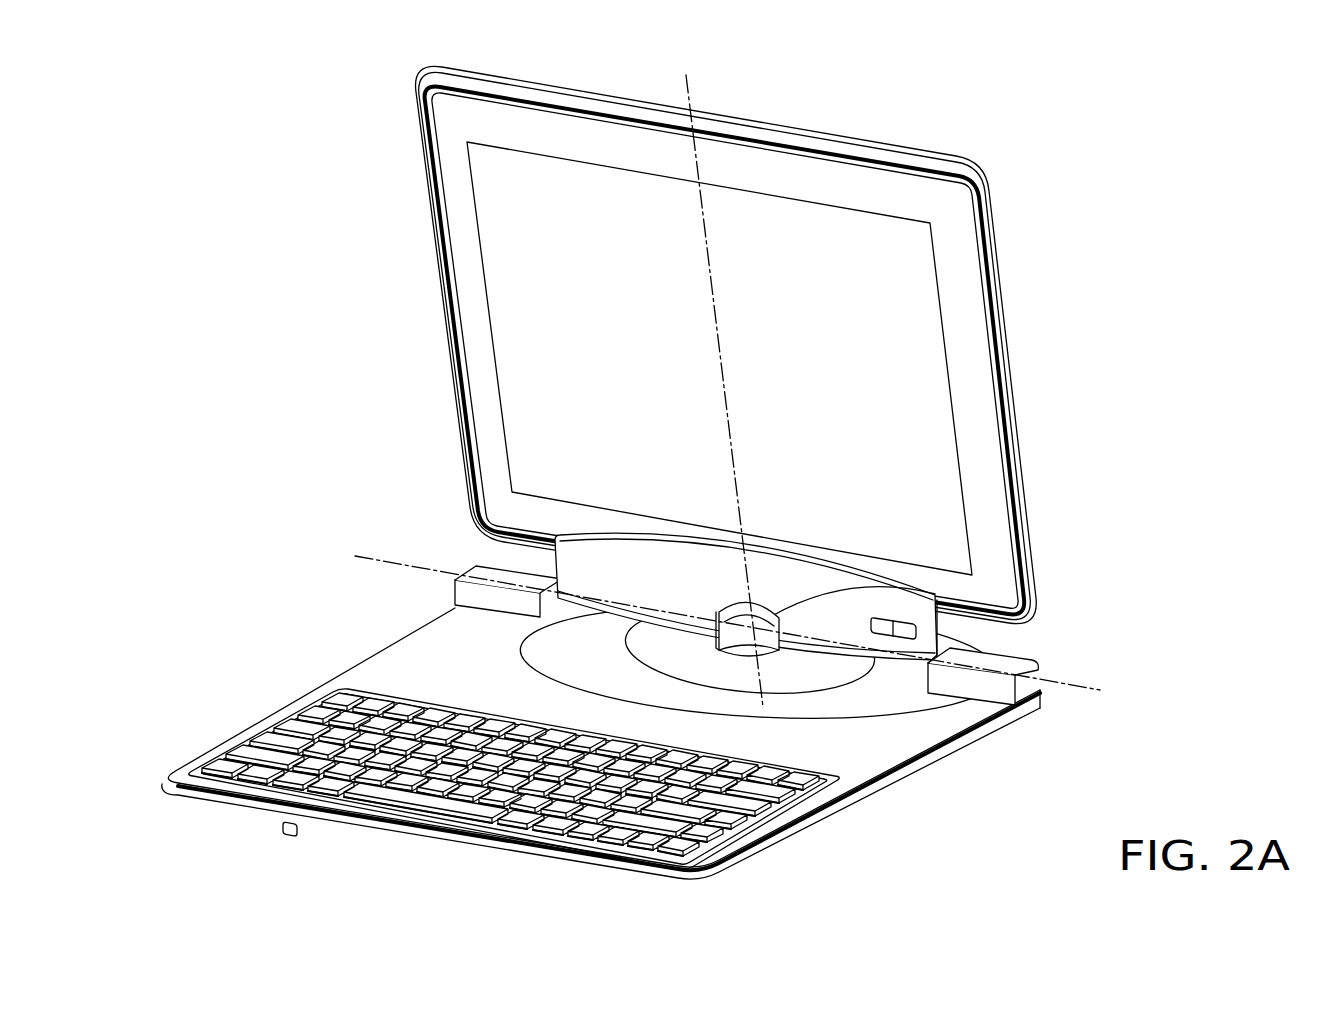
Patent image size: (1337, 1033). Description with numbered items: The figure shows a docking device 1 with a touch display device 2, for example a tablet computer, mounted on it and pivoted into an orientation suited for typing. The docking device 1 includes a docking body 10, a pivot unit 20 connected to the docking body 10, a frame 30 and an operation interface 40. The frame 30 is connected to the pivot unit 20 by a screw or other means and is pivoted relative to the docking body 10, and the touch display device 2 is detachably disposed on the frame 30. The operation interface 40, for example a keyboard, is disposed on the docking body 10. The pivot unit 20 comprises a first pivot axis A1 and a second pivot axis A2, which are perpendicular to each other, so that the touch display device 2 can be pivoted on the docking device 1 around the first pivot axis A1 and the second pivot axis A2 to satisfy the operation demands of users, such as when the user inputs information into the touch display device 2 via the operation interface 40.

The docking device 1 is at (631, 472).
The touch display device 2 is at (412, 237).
The docking body 10 is at (412, 660).
The pivot unit 20 is at (945, 594).
The frame 30 is at (812, 578).
The operation interface 40 is at (258, 753).
The first pivot axis A1 is at (715, 375).
The second pivot axis A2 is at (748, 632).